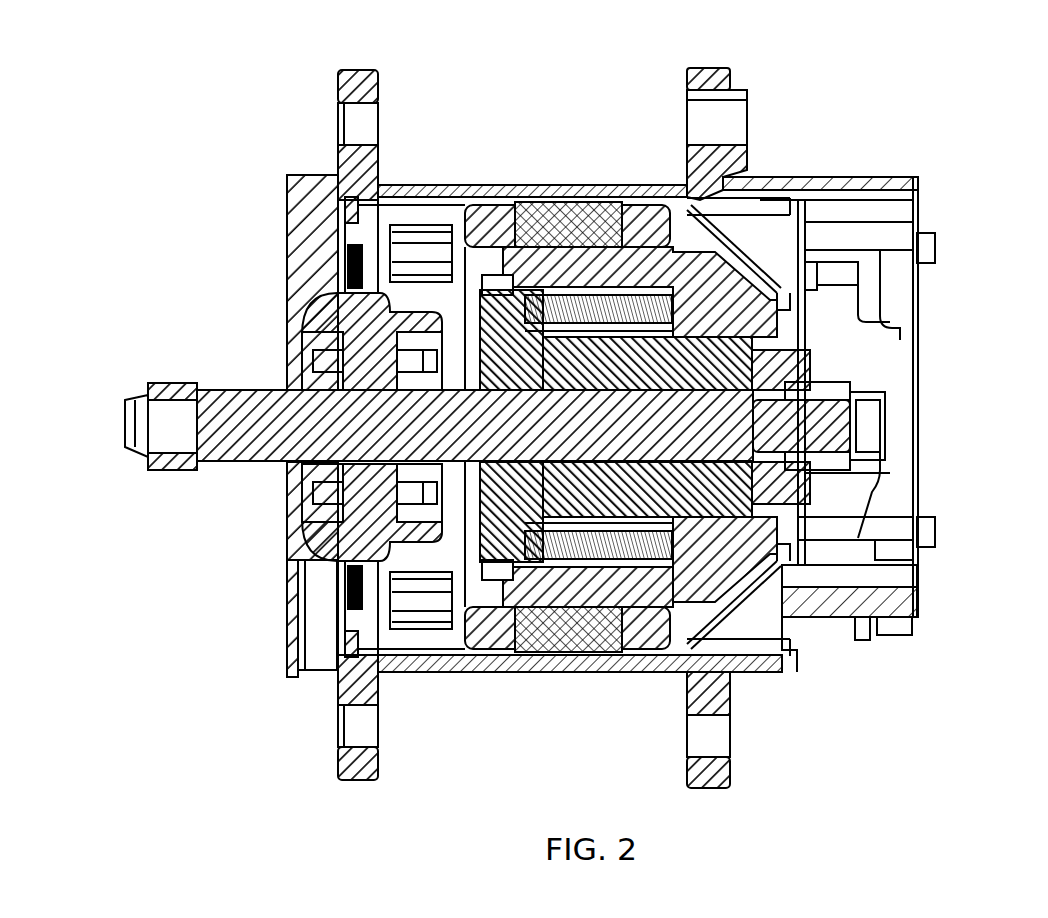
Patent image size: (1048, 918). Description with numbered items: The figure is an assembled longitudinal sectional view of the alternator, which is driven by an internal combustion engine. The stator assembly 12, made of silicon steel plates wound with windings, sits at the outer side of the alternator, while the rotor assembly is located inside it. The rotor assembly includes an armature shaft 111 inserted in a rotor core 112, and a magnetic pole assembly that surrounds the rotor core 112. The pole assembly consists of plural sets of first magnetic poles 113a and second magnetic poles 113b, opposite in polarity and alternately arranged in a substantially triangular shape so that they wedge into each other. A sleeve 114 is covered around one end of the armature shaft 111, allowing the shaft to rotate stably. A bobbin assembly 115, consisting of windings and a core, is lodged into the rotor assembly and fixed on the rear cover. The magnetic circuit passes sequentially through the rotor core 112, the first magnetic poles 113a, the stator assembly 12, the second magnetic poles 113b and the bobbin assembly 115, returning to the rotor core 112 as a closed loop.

The stator assembly 12 is at (577, 195).
The armature shaft 111 is at (720, 437).
The rotor core 112 is at (767, 362).
The first magnetic pole 113a is at (493, 277).
The second magnetic pole 113b is at (650, 277).
The sleeve 114 is at (407, 380).
The bobbin assembly 115 is at (712, 296).